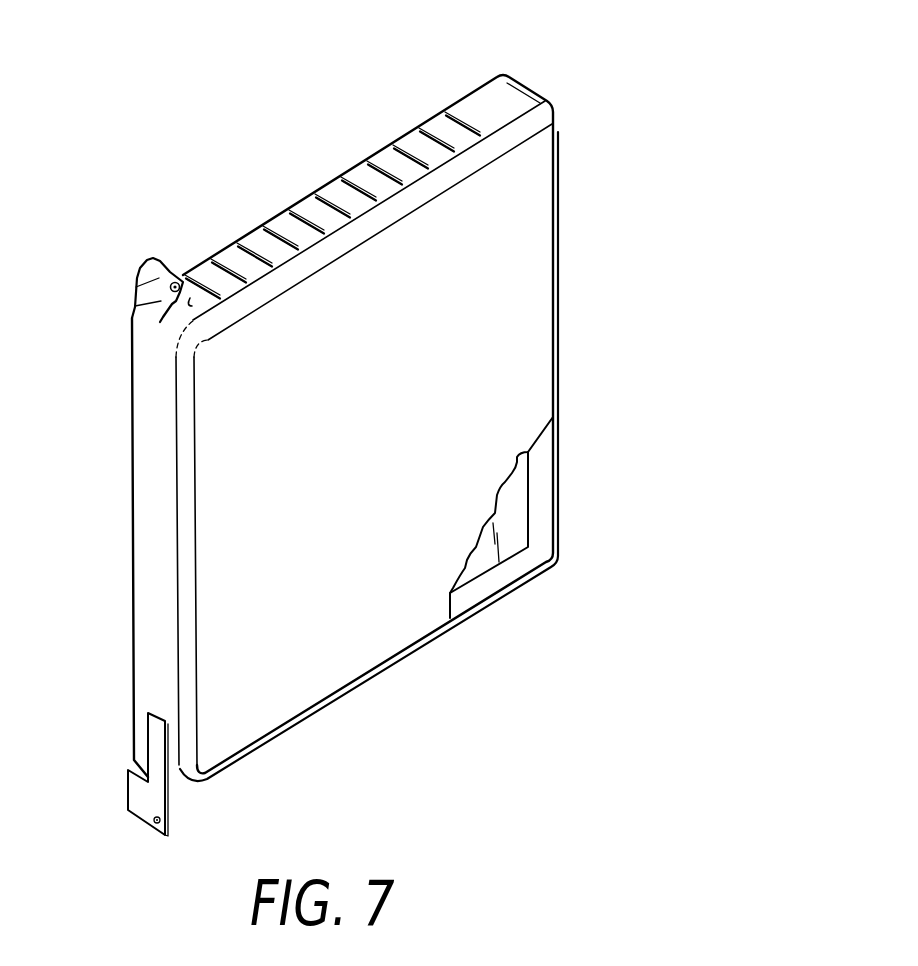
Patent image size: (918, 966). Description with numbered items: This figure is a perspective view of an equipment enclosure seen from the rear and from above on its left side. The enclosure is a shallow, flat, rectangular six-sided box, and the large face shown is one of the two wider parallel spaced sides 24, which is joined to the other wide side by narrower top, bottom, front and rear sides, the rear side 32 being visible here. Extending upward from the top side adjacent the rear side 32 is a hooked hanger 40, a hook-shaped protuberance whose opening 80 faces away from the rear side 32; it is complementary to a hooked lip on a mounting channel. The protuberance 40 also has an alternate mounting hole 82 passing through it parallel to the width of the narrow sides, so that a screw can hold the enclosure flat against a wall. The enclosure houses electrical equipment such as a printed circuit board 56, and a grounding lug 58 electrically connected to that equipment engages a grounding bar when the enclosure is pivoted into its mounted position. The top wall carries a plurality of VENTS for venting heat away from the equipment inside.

The wider side 24 is at (338, 499).
The rear side 32 is at (148, 578).
The hooked hanger 40 is at (157, 265).
The printed circuit board 56 is at (518, 515).
The grounding lug 58 is at (143, 807).
The opening 80 is at (190, 298).
The alternate mounting hole 82 is at (182, 281).
The vents VENTS is at (445, 98).